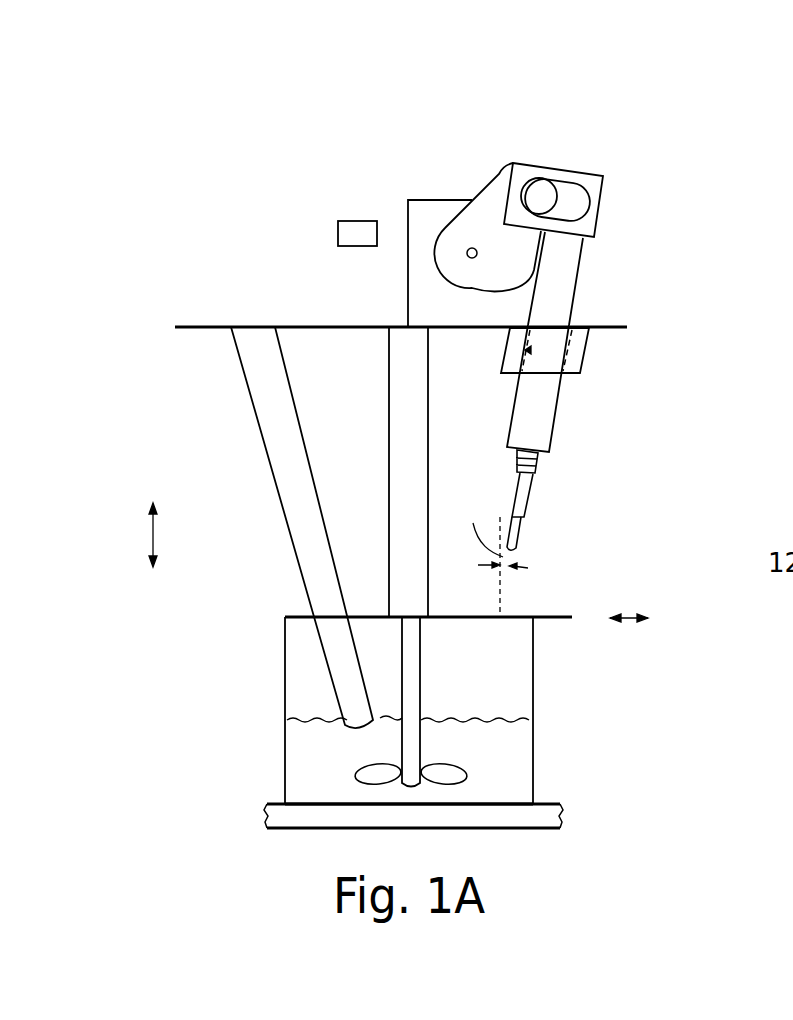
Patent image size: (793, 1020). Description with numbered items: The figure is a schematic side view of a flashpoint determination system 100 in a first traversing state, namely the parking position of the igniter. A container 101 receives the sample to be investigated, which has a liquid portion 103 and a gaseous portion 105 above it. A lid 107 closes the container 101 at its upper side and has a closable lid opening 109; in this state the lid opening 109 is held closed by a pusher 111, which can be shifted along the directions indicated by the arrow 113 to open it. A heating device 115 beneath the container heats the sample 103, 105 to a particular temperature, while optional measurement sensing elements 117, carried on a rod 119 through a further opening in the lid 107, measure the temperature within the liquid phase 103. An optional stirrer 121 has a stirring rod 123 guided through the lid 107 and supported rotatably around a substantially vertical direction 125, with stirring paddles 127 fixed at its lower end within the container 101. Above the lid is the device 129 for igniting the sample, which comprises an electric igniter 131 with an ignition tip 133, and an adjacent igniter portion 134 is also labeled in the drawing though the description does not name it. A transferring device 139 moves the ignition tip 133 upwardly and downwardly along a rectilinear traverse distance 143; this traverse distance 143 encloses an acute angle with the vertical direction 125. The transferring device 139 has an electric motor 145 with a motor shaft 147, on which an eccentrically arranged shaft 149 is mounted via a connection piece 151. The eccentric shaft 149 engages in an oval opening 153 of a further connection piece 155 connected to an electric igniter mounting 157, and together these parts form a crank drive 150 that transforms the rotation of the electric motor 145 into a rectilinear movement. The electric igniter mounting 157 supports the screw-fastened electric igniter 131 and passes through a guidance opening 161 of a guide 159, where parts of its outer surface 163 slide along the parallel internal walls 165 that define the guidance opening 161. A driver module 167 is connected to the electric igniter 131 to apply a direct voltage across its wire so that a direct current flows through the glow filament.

The flashpoint determination system 100 is at (680, 108).
The container 101 is at (285, 650).
The liquid portion 103 is at (343, 771).
The gaseous portion 105 is at (377, 613).
The lid 107 is at (293, 612).
The lid opening 109 is at (502, 617).
The pusher 111 is at (547, 622).
The arrow 113 is at (630, 613).
The heating device 115 is at (262, 813).
The measurement sensing elements 117 is at (333, 677).
The rod 119 is at (257, 430).
The stirrer 121 is at (373, 532).
The stirring rod 123 is at (389, 430).
The vertical direction 125 is at (150, 537).
The stirring paddles 127 is at (467, 767).
The device for igniting 129 is at (652, 220).
The electric igniter 131 is at (559, 500).
The ignition tip 133 is at (529, 532).
The nozzle 134 is at (532, 500).
The transferring device 139 is at (499, 136).
The traverse distance 143 is at (505, 587).
The electric motor 145 is at (408, 292).
The motor shaft 147 is at (468, 250).
The eccentrically arranged shaft 149 is at (540, 195).
The crank drive 150 is at (690, 136).
The connection piece 151 is at (477, 197).
The oval opening 153 is at (577, 175).
The further connection piece 155 is at (600, 200).
The electric igniter mounting 157 is at (585, 270).
The guide 159 is at (592, 359).
The guidance opening 161 is at (573, 318).
The outer surface 163 is at (559, 406).
The internal walls 165 is at (555, 358).
The driver module 167 is at (357, 221).